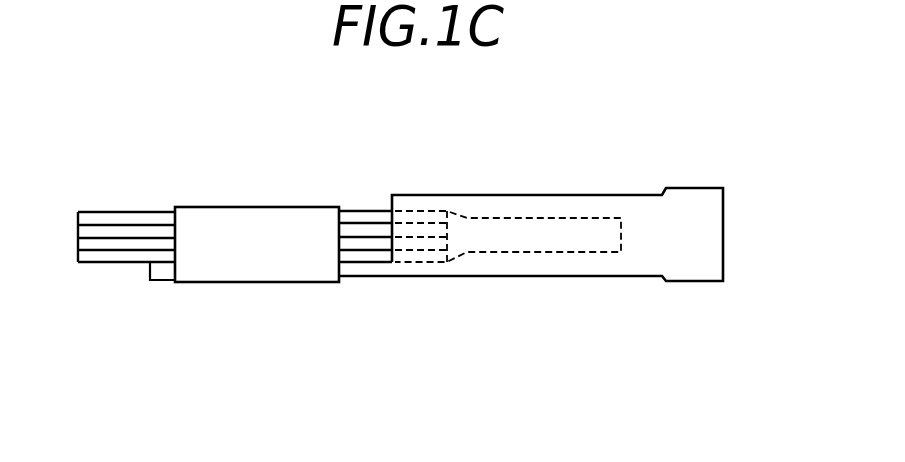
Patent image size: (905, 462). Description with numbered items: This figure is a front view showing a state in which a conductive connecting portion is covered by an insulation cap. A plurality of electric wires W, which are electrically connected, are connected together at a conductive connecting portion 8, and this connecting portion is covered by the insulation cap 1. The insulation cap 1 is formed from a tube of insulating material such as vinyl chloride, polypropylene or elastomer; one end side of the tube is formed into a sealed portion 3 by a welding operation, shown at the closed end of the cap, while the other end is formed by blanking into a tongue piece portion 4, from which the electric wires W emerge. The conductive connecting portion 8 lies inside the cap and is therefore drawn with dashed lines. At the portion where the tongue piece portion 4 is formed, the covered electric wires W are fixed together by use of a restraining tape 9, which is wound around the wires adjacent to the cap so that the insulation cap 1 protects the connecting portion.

The electric wires W is at (128, 233).
The insulation cap 1 is at (578, 186).
The sealed portion 3 is at (688, 266).
The tongue piece portion 4 is at (363, 268).
The conductive connecting portion 8 is at (532, 233).
The restraining tape 9 is at (250, 263).